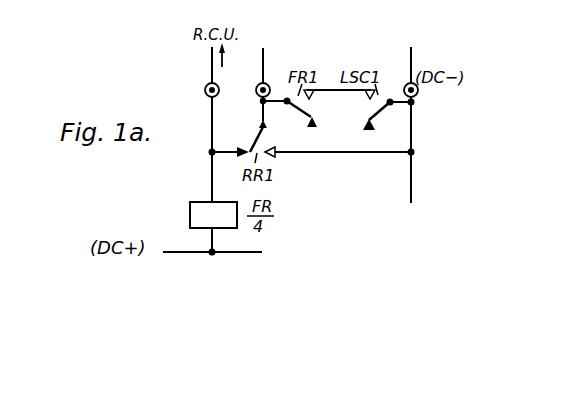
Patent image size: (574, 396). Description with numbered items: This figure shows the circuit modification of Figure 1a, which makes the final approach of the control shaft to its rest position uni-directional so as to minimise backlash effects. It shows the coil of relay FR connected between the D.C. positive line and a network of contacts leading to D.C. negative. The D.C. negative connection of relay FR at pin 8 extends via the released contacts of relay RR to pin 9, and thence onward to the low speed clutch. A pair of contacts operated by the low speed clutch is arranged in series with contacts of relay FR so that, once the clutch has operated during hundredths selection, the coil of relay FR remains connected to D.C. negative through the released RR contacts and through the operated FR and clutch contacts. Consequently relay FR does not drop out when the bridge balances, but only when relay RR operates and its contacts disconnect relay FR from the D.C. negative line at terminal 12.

The pin 8 is at (203, 124).
The pin 9 is at (254, 84).
The terminal lead 12 is at (405, 125).